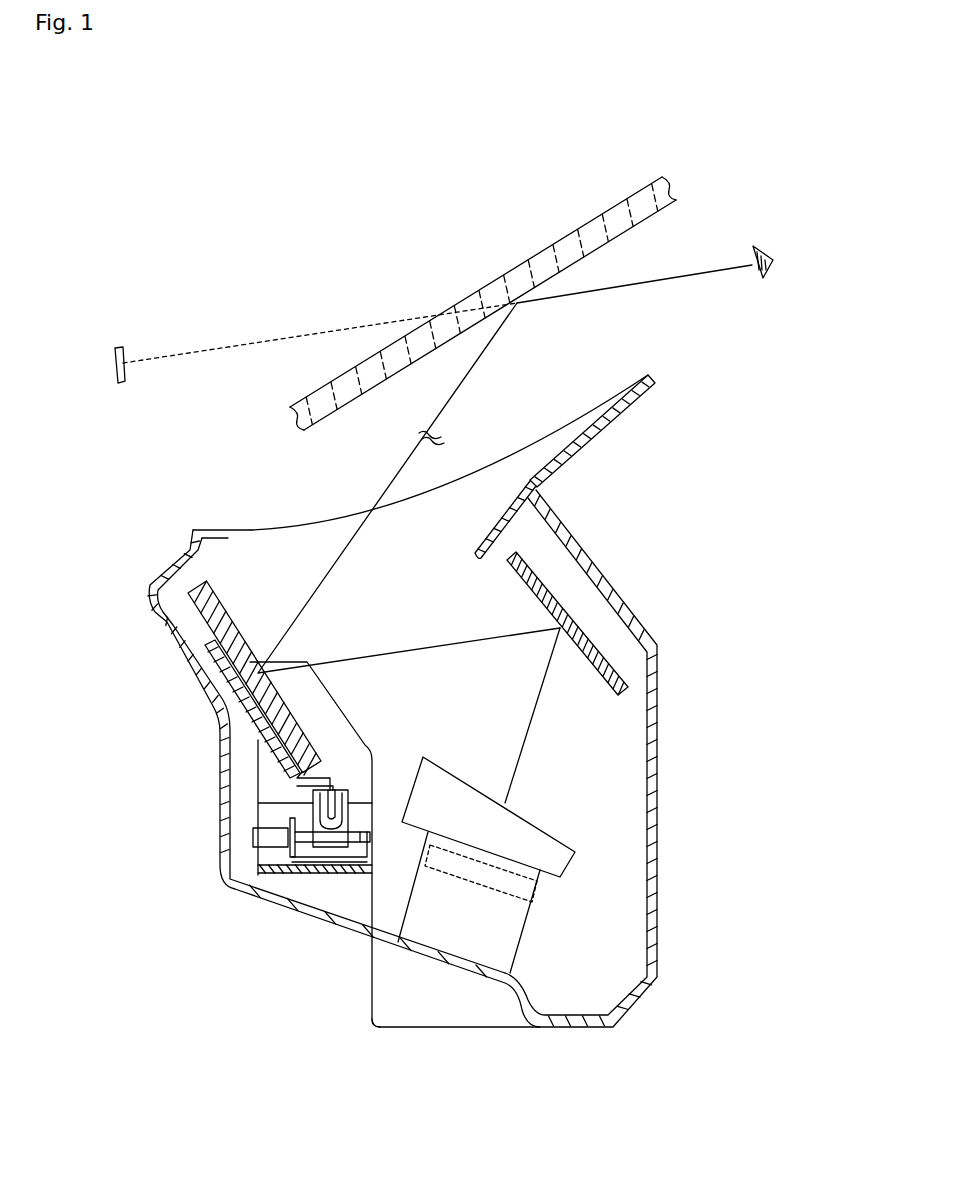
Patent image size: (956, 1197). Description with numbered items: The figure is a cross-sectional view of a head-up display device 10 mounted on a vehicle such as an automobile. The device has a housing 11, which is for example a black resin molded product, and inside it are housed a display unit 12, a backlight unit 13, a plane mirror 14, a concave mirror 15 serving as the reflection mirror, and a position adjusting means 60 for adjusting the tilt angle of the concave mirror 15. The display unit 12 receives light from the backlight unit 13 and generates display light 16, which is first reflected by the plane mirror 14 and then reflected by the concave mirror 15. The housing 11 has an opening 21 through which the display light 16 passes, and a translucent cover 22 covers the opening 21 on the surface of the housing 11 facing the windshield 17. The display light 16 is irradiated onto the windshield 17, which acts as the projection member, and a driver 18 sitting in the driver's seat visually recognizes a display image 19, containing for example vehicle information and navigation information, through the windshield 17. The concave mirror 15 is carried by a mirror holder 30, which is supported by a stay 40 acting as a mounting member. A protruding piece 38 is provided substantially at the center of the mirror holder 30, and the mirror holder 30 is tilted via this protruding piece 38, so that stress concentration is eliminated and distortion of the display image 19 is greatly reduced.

The head-up display device 10 is at (458, 701).
The housing 11 is at (660, 870).
The display unit 12 is at (556, 848).
The backlight unit 13 is at (538, 893).
The plane mirror 14 is at (552, 594).
The concave mirror 15 is at (204, 622).
The display light 16 is at (529, 723).
The windshield 17 is at (578, 230).
The driver 18 is at (768, 252).
The display image 19 is at (117, 350).
The opening 21 is at (236, 538).
The translucent cover 22 is at (470, 471).
The mirror holder 30 is at (255, 738).
The protruding piece 38 is at (325, 777).
The stay 40 is at (346, 709).
The position adjusting means 60 is at (353, 793).